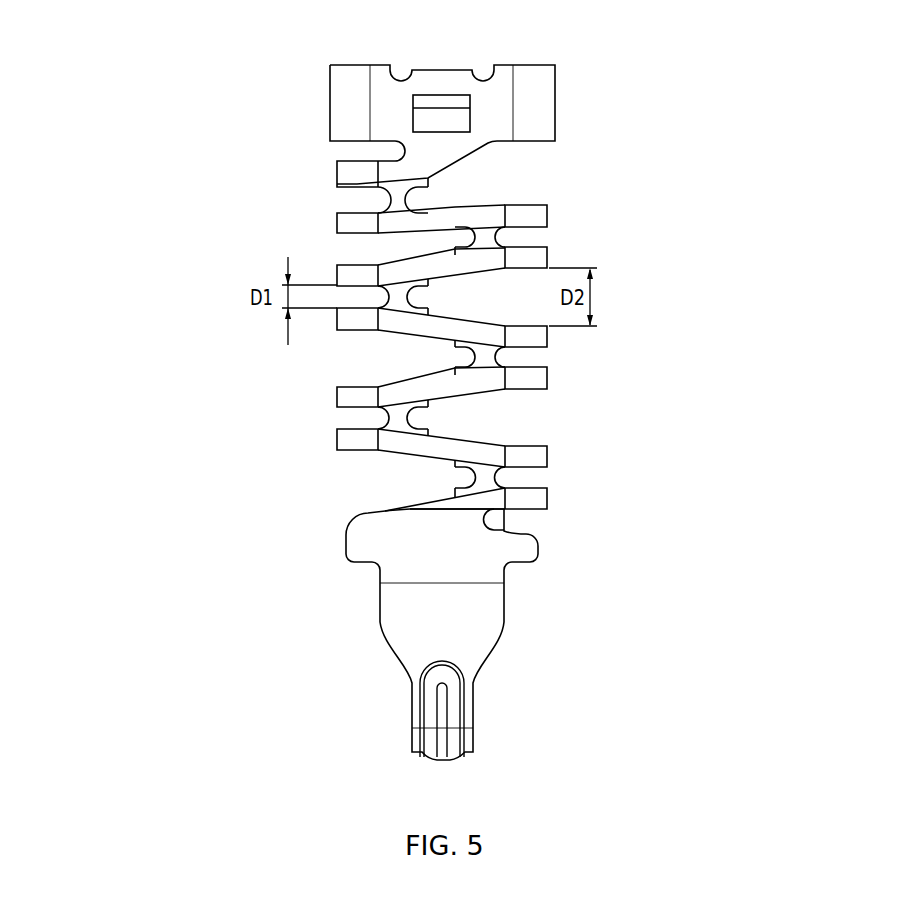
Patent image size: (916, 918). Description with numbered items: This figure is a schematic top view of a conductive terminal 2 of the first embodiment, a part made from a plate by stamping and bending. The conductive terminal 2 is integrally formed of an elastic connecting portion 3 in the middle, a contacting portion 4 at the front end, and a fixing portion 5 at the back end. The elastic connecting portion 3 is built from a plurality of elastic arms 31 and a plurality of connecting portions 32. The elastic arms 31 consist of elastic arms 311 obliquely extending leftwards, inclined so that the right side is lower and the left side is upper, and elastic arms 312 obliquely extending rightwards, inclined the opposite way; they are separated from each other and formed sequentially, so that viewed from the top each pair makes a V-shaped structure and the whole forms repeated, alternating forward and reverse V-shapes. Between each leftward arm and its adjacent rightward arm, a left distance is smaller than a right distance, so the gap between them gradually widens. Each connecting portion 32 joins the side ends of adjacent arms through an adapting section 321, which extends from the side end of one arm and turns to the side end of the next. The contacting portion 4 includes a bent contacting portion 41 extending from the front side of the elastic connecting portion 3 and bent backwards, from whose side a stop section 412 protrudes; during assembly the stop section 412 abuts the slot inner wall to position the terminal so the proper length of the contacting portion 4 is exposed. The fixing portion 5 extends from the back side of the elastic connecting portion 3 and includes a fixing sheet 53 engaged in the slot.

The conductive terminal 2 is at (790, 178).
The elastic connecting portion 3 is at (382, 354).
The contacting portion 4 is at (438, 641).
The fixing portion 5 is at (378, 102).
The elastic arm 31 is at (327, 438).
The connecting portion 32 is at (569, 476).
The bent contacting portion 41 is at (425, 743).
The fixing sheet 53 is at (442, 77).
The elastic arm obliquely extending leftwards 311 is at (443, 445).
The elastic arm obliquely extending rightwards 312 is at (440, 384).
The adapting section 321 is at (497, 478).
The stop section 412 is at (358, 543).